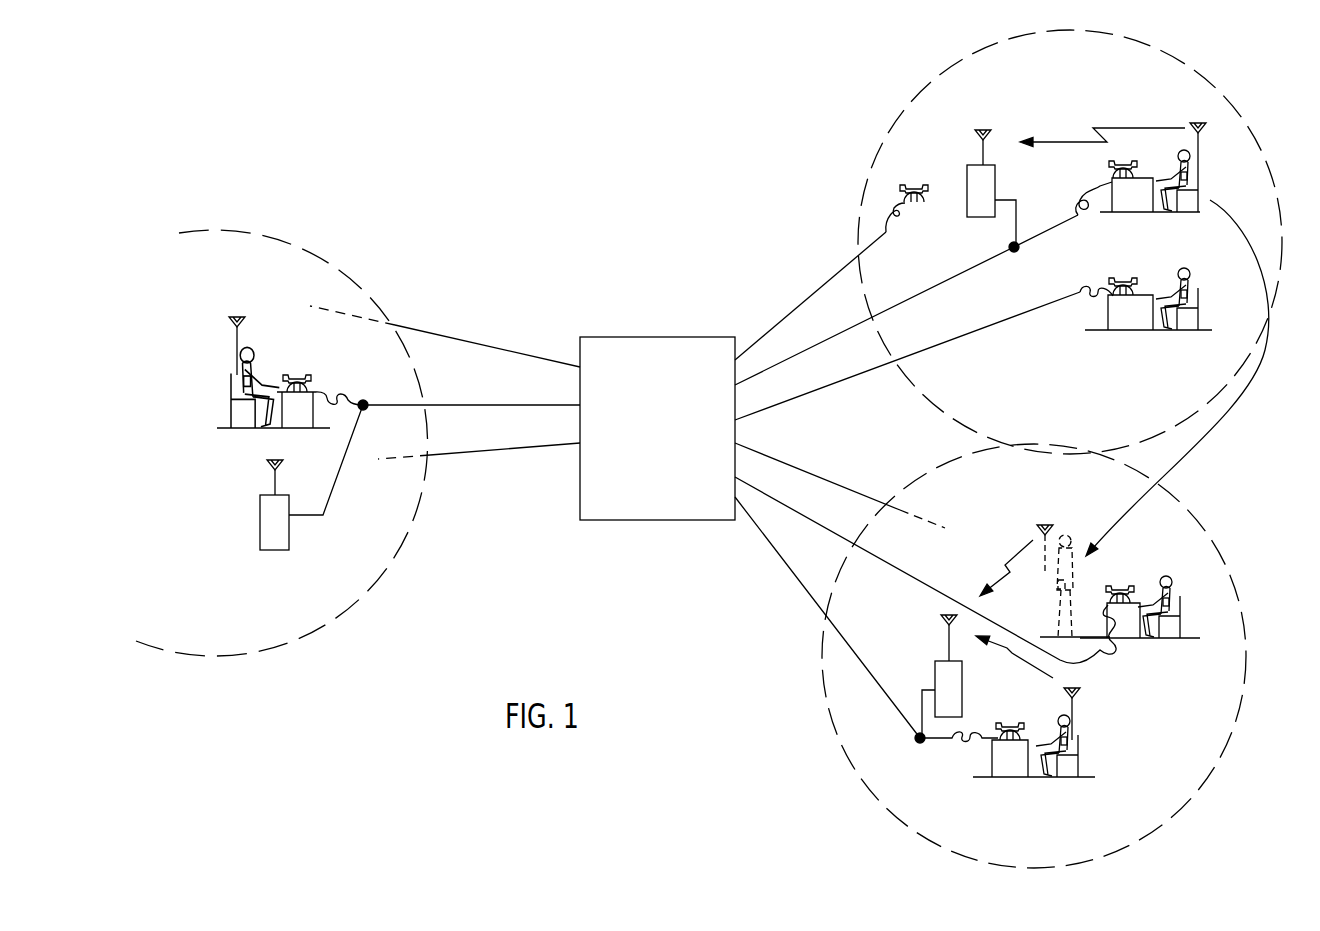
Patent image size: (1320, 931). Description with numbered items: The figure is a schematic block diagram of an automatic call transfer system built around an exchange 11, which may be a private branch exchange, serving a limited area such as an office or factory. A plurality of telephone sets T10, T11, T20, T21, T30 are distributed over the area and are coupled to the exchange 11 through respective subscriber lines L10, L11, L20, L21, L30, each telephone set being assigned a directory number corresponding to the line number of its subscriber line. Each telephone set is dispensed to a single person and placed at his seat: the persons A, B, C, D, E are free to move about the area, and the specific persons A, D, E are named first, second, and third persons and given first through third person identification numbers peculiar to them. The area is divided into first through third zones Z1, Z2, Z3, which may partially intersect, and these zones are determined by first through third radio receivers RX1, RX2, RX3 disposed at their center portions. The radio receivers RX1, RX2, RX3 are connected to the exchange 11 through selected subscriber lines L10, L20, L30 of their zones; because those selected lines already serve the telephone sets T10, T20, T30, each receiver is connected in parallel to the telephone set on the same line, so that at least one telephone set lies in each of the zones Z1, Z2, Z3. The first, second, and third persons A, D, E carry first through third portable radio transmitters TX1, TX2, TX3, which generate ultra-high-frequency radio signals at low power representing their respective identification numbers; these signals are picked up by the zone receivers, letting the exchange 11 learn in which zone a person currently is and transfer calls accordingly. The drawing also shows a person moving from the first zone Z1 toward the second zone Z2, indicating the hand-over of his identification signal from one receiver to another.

The exchange 11 is at (644, 337).
The first zone Z1 is at (912, 95).
The second zone Z2 is at (848, 765).
The third zone Z3 is at (335, 262).
The first radio receiver RX1 is at (995, 178).
The second radio receiver RX2 is at (935, 669).
The third radio receiver RX3 is at (260, 518).
The first portable radio transmitter TX1 is at (1195, 181).
The second portable radio transmitter TX2 is at (1062, 742).
The third portable radio transmitter TX3 is at (233, 377).
The telephone set T10 is at (1119, 172).
The telephone set T11 is at (1121, 285).
The telephone set T20 is at (1005, 725).
The telephone set T21 is at (1120, 588).
The telephone set T30 is at (299, 374).
The subscriber line L10 is at (923, 283).
The subscriber line L11 is at (924, 353).
The subscriber line L20 is at (866, 620).
The subscriber line L21 is at (925, 570).
The subscriber line L30 is at (447, 393).
The first person A is at (1192, 153).
The person B is at (1182, 268).
The person C is at (1162, 572).
The second person D is at (1052, 710).
The third person E is at (262, 343).